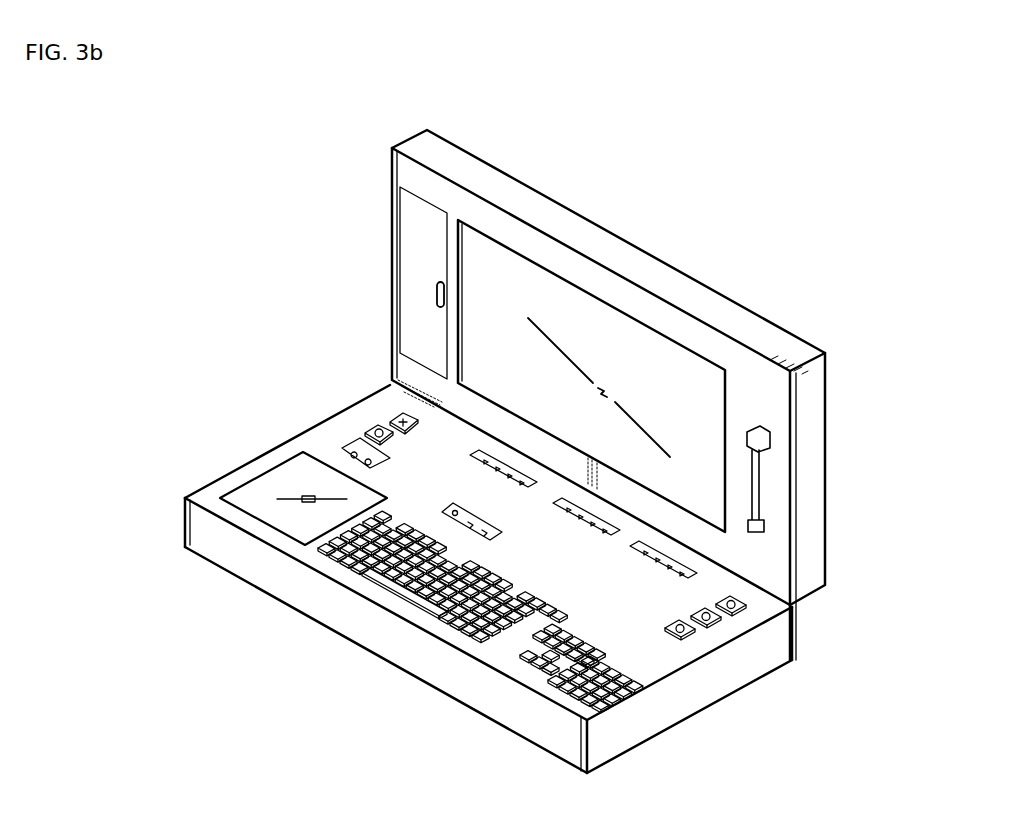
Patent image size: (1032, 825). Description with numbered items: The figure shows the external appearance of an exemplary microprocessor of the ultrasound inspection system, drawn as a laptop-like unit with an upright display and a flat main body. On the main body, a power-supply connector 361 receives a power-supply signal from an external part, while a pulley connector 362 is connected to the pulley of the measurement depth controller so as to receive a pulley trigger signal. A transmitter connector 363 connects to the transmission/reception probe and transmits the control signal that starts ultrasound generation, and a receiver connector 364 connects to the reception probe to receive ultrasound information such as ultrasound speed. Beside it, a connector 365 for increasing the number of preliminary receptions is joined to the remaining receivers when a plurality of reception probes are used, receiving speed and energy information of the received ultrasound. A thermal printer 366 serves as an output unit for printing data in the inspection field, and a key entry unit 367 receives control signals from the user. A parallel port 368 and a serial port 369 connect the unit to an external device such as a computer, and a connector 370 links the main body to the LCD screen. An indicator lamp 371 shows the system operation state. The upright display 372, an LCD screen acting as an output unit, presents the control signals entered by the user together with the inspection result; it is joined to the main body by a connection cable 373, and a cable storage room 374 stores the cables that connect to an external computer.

The power-supply connector 361 is at (440, 503).
The pulley connector 362 is at (365, 436).
The transmitter connector 363 is at (390, 388).
The receiver connector 364 is at (690, 628).
The connector for increasing the number of preliminary receptions 365 is at (718, 610).
The thermal printer 366 is at (230, 472).
The key entry unit 367 is at (345, 555).
The parallel port 368 is at (477, 452).
The serial port 369 is at (745, 602).
The connector connected to an LCD screen 370 is at (695, 574).
The indicator lamp 371 is at (253, 497).
The display 372 is at (667, 363).
The connection cable 373 is at (772, 456).
The cable storage room 374 is at (413, 288).